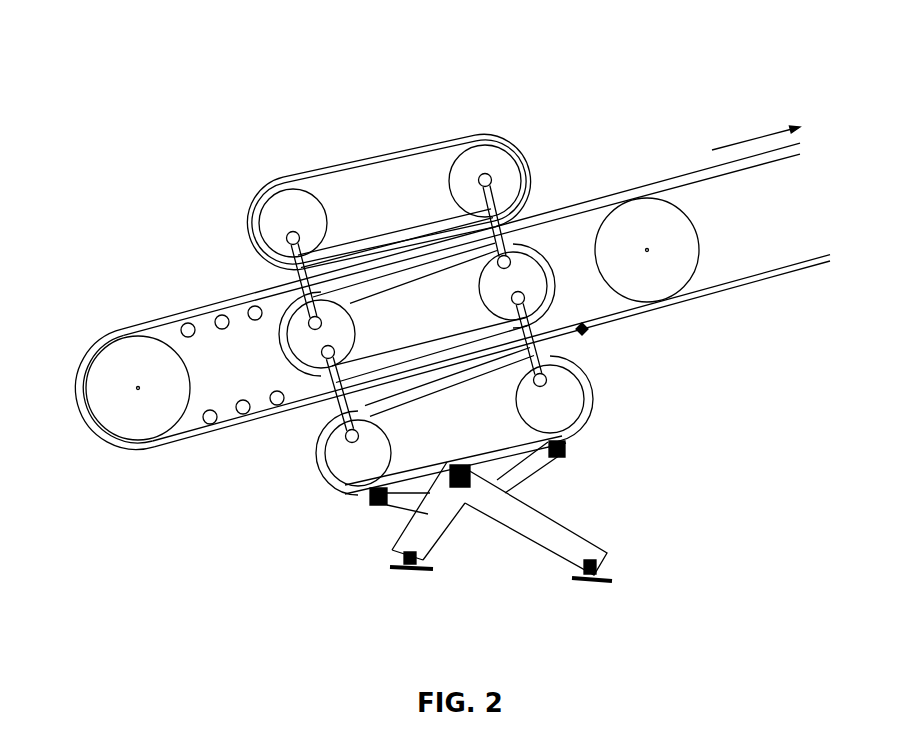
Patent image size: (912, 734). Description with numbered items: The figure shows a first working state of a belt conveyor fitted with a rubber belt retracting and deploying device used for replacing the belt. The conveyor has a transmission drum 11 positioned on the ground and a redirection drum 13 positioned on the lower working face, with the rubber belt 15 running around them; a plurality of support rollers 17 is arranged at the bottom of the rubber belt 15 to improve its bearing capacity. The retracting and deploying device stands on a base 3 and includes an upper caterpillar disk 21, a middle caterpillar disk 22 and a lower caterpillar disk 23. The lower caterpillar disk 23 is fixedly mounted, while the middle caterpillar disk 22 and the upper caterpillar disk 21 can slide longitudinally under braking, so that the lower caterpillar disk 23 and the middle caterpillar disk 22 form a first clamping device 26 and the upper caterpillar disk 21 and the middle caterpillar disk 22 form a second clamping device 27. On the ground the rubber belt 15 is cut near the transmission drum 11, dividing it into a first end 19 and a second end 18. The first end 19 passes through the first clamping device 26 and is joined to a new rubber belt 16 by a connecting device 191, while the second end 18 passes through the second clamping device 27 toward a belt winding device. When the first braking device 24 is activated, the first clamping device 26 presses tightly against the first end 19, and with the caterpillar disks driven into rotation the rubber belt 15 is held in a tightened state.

The base 3 is at (523, 527).
The transmission drum 11 is at (655, 228).
The redirection drum 13 is at (120, 360).
The rubber belt 15 is at (182, 313).
The new rubber belt 16 is at (700, 297).
The support rollers 17 is at (220, 315).
The second end 18 is at (800, 127).
The first end 19 is at (567, 330).
The connecting device 191 is at (588, 331).
The upper caterpillar disk 21 is at (422, 178).
The middle caterpillar disk 22 is at (523, 267).
The lower caterpillar disk 23 is at (358, 468).
The first braking device 24 is at (340, 403).
The first clamping device 26 is at (590, 388).
The second clamping device 27 is at (284, 322).